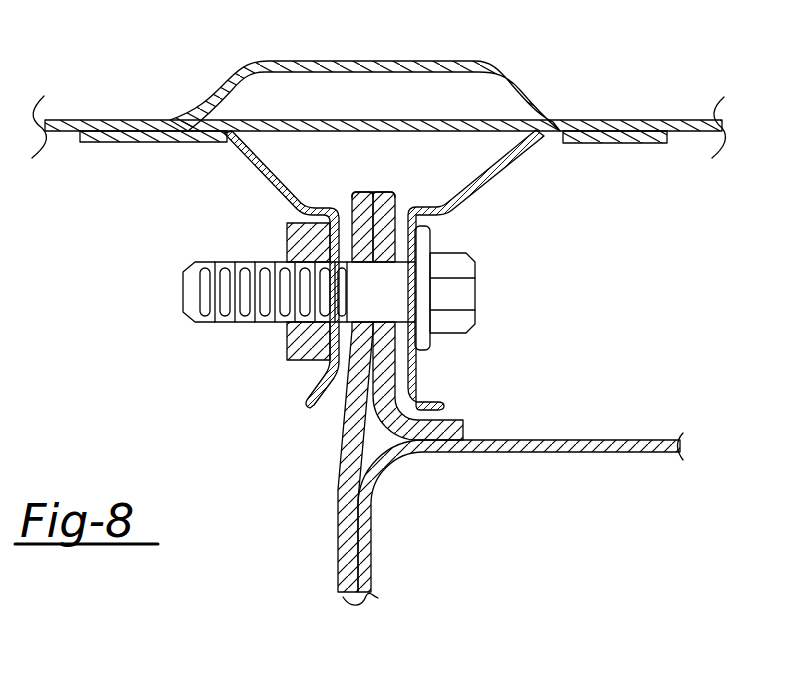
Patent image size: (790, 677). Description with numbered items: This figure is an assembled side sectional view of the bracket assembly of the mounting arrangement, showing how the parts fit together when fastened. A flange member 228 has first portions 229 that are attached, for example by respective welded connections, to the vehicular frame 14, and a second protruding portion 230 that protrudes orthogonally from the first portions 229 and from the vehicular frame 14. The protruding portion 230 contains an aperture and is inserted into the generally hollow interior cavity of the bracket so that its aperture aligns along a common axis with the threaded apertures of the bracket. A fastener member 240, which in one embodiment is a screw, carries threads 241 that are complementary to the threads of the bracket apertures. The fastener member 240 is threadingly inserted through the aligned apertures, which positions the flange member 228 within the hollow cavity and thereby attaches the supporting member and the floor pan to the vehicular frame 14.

The vehicular frame 14 is at (610, 440).
The flange member 228 is at (352, 405).
The first portions 229 is at (445, 413).
The second protruding portion 230 is at (373, 196).
The fastener member 240 is at (458, 283).
The threads 241 is at (226, 265).